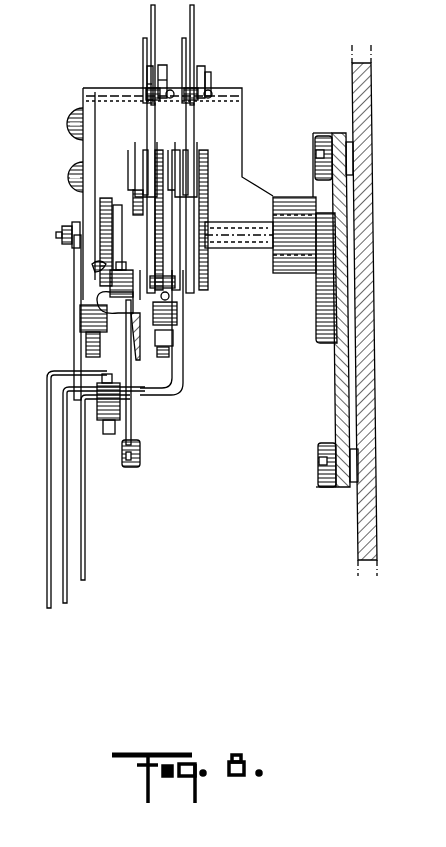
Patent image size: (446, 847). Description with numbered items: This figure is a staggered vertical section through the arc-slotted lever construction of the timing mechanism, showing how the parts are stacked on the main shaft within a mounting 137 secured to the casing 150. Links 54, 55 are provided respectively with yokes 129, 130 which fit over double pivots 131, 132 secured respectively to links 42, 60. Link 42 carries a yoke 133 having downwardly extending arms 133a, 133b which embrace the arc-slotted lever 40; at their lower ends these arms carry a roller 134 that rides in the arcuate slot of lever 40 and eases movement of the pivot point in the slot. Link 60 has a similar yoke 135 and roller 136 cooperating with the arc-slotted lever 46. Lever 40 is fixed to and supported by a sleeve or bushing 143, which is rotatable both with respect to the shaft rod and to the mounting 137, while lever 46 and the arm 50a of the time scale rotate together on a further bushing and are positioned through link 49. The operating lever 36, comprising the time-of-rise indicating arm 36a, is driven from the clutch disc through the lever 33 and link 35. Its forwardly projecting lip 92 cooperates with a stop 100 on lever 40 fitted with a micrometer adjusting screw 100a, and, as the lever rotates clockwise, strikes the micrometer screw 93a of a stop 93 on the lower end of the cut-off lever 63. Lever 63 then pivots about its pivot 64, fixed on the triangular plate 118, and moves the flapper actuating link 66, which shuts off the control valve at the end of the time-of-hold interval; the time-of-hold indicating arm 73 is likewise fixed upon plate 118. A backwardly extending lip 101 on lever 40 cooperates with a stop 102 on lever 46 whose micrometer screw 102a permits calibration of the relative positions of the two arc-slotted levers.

The casing 150 is at (368, 546).
The bushing 143 is at (247, 230).
The mounting 137 is at (105, 95).
The link 42 is at (151, 14).
The link 60 is at (194, 14).
The link 54 is at (143, 44).
The link 55 is at (182, 60).
The double pivot 131 is at (147, 75).
The yoke 129 is at (162, 78).
The yoke 130 is at (200, 70).
The double pivot 132 is at (209, 78).
The yoke 133 is at (140, 140).
The arm 133a is at (132, 152).
The arm 133b is at (166, 150).
The yoke 135 is at (188, 150).
The arc-slotted lever 40 is at (143, 160).
The arc-slotted lever 46 is at (190, 150).
The roller 134 is at (156, 192).
The roller 136 is at (196, 190).
The triangular plate 118 is at (102, 212).
The flapper actuating link 66 is at (63, 240).
The micrometer adjusting screw 100a is at (92, 268).
The stop 100 is at (110, 284).
The lip 92 is at (97, 302).
The pivot 64 is at (82, 324).
The cut-off lever 63 is at (74, 348).
The lip 101 is at (175, 283).
The stop 102 is at (178, 312).
The micrometer screw 102a is at (174, 338).
The link 49 is at (160, 347).
The operating lever 36 is at (138, 360).
The link 35 is at (131, 420).
The lever 33 is at (140, 452).
The stop 93 is at (98, 404).
The micrometer screw 93a is at (103, 435).
The time-of-hold indicating arm 73 is at (48, 589).
The time-of-rise indicating arm 36a is at (68, 589).
The arm 50a is at (86, 536).